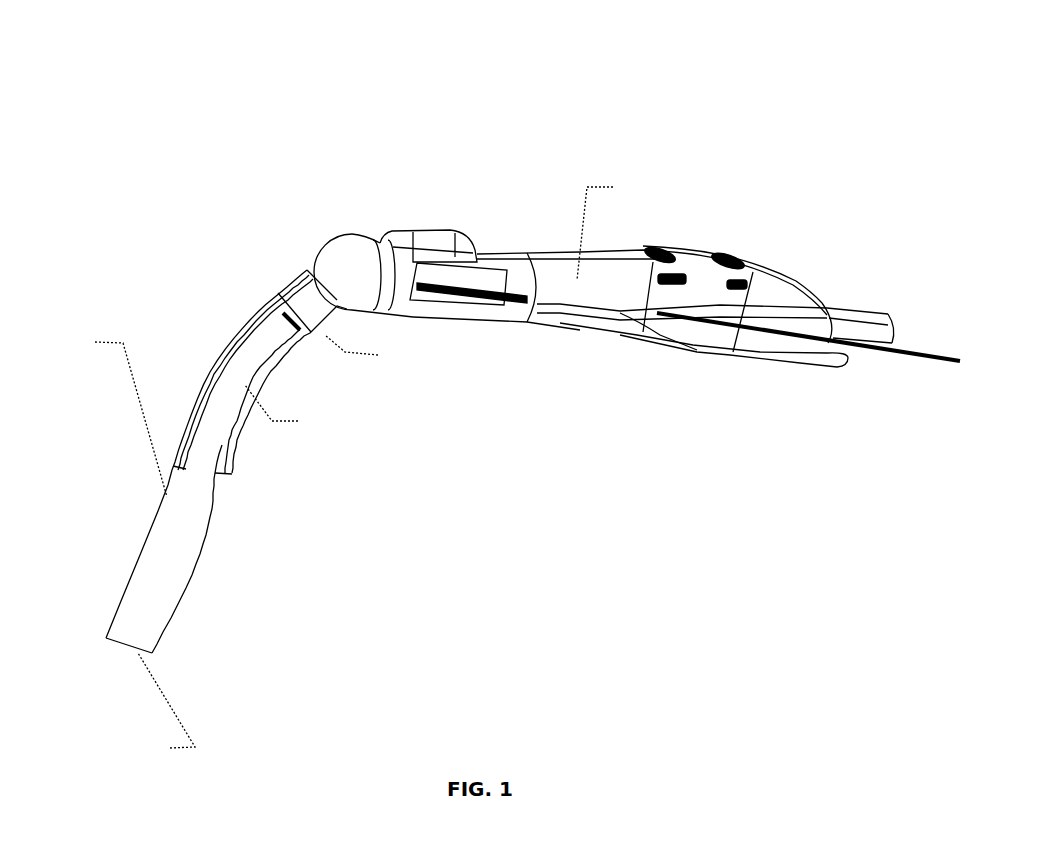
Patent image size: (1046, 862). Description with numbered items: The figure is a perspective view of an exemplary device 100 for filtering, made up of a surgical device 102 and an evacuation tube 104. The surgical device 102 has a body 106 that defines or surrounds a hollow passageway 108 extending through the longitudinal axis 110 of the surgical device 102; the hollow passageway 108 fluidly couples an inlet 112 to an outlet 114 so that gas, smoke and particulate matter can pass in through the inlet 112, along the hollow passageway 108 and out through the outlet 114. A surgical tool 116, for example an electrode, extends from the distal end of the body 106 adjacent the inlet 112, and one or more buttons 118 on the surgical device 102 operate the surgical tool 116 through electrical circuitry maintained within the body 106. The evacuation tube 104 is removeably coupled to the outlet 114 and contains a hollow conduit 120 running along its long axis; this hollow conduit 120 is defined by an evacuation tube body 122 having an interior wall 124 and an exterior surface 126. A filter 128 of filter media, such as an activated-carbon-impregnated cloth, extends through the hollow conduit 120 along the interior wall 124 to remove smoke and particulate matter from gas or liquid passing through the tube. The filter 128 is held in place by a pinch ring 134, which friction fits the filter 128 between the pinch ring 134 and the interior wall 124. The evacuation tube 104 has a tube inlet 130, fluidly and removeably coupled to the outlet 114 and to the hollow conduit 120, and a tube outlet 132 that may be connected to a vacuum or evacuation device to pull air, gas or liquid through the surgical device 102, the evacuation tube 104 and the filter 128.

The device for filtering 100 is at (309, 106).
The surgical device 102 is at (558, 250).
The evacuation tube 104 is at (150, 511).
The body 106 is at (668, 353).
The hollow passageway 108 is at (613, 293).
The longitudinal axis 110 is at (937, 357).
The inlet 112 is at (888, 320).
The outlet 114 is at (318, 278).
The surgical tool 116 is at (887, 341).
The buttons 118 is at (668, 245).
The hollow conduit 120 is at (228, 377).
The evacuation tube body 122 is at (210, 513).
The interior wall 124 is at (196, 439).
The exterior surface 126 is at (183, 407).
The filter 128 is at (263, 349).
The tube inlet 130 is at (331, 281).
The tube outlet 132 is at (138, 653).
The pinch ring 134 is at (309, 334).